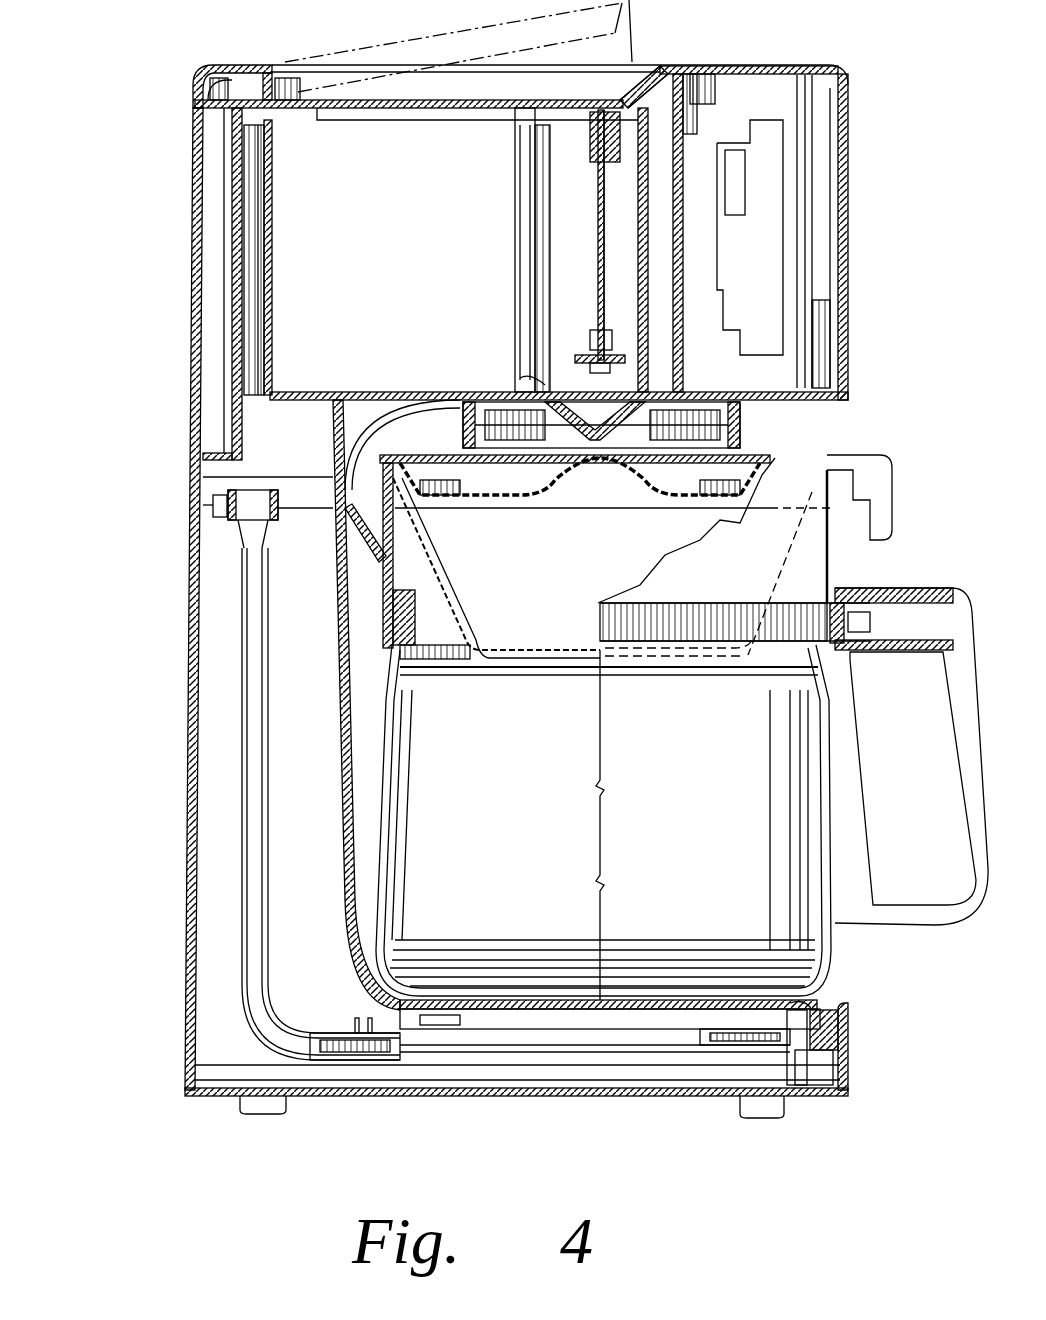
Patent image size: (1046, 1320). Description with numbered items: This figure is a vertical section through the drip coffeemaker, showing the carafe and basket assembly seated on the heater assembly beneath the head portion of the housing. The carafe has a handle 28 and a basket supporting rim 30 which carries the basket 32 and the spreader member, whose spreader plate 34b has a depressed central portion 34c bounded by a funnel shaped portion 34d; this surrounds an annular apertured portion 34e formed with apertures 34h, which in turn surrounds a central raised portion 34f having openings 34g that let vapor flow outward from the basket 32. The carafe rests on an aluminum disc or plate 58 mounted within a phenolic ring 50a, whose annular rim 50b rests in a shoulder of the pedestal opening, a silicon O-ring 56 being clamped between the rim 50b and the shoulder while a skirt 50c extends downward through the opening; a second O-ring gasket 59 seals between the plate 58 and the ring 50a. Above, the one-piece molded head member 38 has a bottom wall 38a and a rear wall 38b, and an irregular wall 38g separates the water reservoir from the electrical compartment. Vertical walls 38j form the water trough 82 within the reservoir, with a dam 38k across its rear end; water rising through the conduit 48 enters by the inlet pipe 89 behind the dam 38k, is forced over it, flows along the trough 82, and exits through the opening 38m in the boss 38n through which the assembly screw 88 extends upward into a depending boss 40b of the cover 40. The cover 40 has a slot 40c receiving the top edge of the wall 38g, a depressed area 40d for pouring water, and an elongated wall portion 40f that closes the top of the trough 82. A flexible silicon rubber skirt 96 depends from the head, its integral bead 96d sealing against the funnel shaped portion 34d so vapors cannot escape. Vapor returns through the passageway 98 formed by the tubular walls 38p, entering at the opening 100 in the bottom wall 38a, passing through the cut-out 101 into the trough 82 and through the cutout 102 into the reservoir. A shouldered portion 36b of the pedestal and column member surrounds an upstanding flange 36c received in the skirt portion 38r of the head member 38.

The handle 28 is at (905, 590).
The basket supporting rim 30 is at (832, 545).
The basket 32 is at (460, 630).
The spreader plate 34b is at (770, 456).
The depressed central portion 34c is at (560, 512).
The funnel shaped portion 34d is at (398, 472).
The annular apertured portion 34e is at (522, 498).
The central raised portion 34f is at (742, 416).
The openings 34g is at (587, 482).
The apertures 34h is at (505, 478).
The shouldered portion 36b is at (222, 497).
The upstanding flange 36c is at (235, 522).
The head member 38 is at (192, 289).
The bottom wall 38a is at (380, 392).
The rear wall 38b is at (215, 232).
The irregular wall 38g is at (685, 138).
The vertical walls 38j is at (242, 190).
The dam 38k is at (272, 242).
The opening 38m is at (585, 360).
The boss 38n is at (600, 335).
The tubular walls 38p is at (598, 240).
The skirt portion 38r is at (205, 470).
The cover 40 is at (200, 75).
The depending boss 40b is at (600, 160).
The groove or slot 40c is at (700, 100).
The depressed area 40d is at (490, 100).
The continuous elongated wall portion 40f is at (222, 92).
The water conduit 48 is at (242, 772).
The phenolic ring 50a is at (790, 1010).
The annular rim 50b is at (805, 1006).
The skirt 50c is at (800, 1040).
The silicon O-ring 56 is at (832, 1042).
The aluminum disc or plate 58 is at (465, 1000).
The second O-ring gasket 59 is at (745, 1030).
The water trough 82 is at (392, 182).
The assembly screw 88 is at (598, 270).
The inlet pipe 89 is at (250, 560).
The flexible skirt 96 is at (463, 420).
The integral bead 96d is at (742, 522).
The vertically extending passageway 98 is at (530, 130).
The opening 100 is at (540, 380).
The cut-out or opening 101 is at (535, 150).
The cutout or opening 102 is at (650, 86).